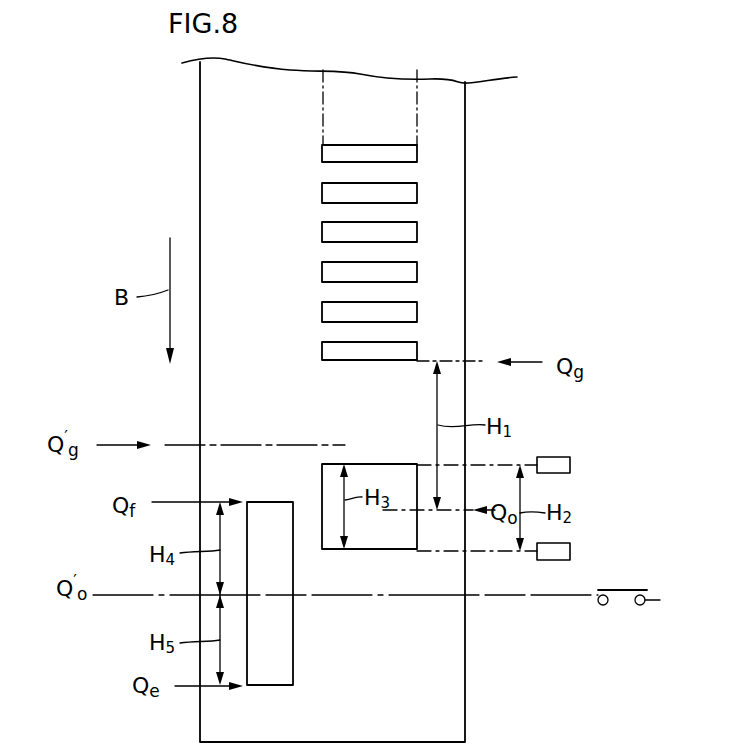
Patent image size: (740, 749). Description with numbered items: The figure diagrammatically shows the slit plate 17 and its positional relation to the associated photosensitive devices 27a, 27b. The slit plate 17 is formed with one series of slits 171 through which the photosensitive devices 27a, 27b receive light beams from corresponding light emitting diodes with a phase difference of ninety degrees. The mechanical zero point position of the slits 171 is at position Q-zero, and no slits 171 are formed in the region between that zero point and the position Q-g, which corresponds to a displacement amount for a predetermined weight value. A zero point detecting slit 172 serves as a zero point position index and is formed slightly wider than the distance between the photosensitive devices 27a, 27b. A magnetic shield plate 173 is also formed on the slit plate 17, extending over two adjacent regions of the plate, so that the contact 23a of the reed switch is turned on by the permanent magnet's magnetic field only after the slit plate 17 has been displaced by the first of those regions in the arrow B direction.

The slit plate 17 is at (485, 257).
The slits 171 is at (330, 347).
The zero point detecting slit 172 is at (373, 468).
The magnetic shield plate 173 is at (285, 672).
The photosensitive device 27a is at (557, 549).
The photosensitive device 27b is at (556, 464).
The contact 23a is at (614, 592).